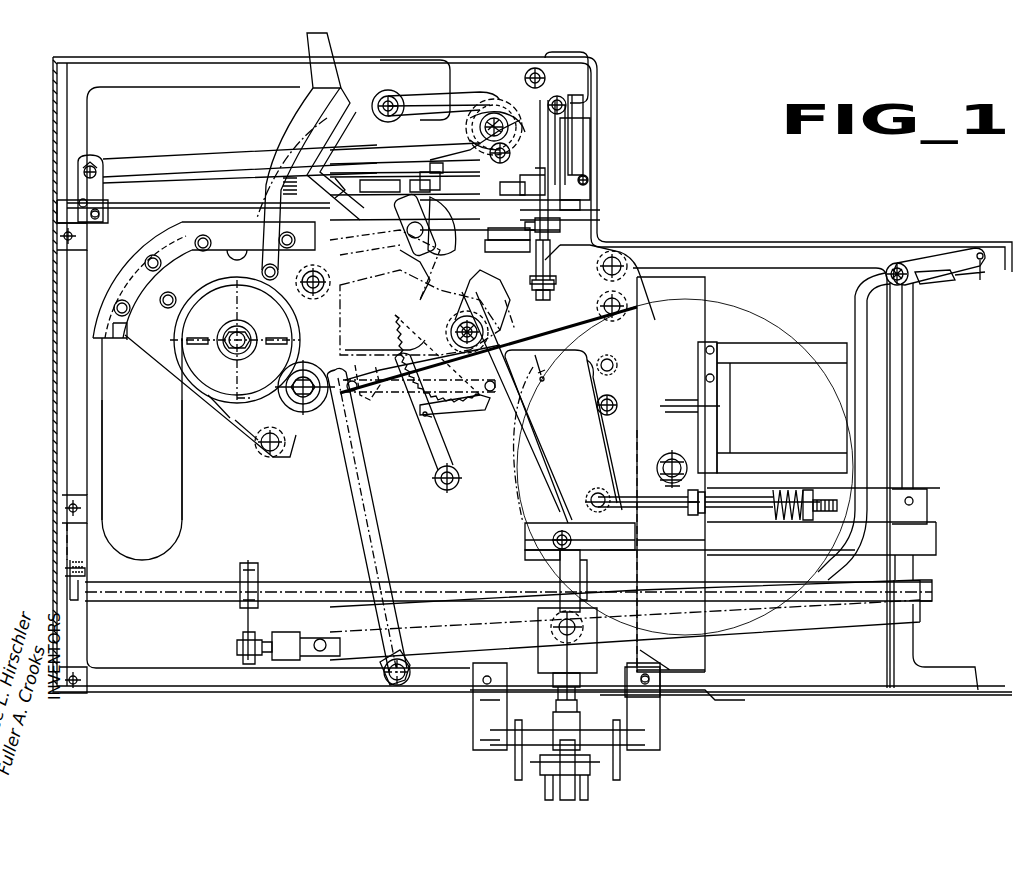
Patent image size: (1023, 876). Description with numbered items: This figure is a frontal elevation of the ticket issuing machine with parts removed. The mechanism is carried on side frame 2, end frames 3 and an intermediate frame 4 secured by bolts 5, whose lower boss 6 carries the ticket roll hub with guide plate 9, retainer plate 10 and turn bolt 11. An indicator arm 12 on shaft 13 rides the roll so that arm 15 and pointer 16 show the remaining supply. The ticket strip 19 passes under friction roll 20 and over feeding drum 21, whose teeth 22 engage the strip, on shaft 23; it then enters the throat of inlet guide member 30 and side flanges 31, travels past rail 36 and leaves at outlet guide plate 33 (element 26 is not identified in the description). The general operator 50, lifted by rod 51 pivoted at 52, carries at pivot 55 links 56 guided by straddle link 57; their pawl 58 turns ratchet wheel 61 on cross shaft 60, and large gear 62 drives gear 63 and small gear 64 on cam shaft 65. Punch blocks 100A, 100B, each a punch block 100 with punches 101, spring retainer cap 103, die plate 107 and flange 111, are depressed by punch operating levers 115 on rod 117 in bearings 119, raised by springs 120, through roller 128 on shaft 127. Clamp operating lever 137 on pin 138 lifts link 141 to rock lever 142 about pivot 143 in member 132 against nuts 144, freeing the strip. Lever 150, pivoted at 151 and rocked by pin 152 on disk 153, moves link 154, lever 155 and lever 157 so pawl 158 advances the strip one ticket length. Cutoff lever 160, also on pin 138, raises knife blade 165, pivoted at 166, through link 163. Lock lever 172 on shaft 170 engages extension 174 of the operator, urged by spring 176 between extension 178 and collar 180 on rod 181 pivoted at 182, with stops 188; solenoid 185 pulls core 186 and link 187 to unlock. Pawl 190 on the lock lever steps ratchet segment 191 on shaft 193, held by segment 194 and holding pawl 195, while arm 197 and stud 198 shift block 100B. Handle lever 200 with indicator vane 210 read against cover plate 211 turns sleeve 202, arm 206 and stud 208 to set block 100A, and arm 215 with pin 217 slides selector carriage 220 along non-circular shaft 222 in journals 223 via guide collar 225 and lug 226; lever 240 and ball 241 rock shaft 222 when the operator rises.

The side frame 2 is at (75, 384).
The end frames 3 is at (64, 536).
The intermediate frame 4 is at (238, 420).
The bolts 5 is at (258, 450).
The double elongated boss 6 is at (662, 480).
The guide plate 9 is at (705, 648).
The retainer plate 10 is at (240, 395).
The turn bolt 11 is at (665, 458).
The indicator arm 12 is at (856, 333).
The shaft 13 is at (905, 280).
The arm 15 is at (940, 255).
The pointer 16 is at (953, 277).
The ticket strip 19 is at (168, 438).
The friction roll 20 is at (350, 345).
The feeding drum 21 is at (195, 372).
The teeth 22 is at (180, 362).
The shaft 23 is at (245, 337).
The key 26 is at (198, 338).
The inlet guide member 30 is at (120, 322).
The side flanges 31 is at (125, 256).
The outlet guide plate 33 is at (550, 215).
The rail 36 is at (122, 212).
The general operator 50 is at (440, 650).
The rod 51 is at (555, 693).
The pivot 52 is at (560, 632).
The pivot 55 is at (312, 638).
The links 56 is at (315, 508).
The straddle link 57 is at (345, 278).
The pawl 58 is at (308, 270).
The cross shaft 60 is at (370, 245).
The ratchet wheel 61 is at (372, 176).
The large gear 62 is at (303, 143).
The gear 63 is at (208, 405).
The small gear 64 is at (470, 136).
The cam shaft 65 is at (495, 115).
The punch block 100 is at (400, 176).
The punch block 100A is at (445, 188).
The punch block 100B is at (520, 188).
The punch 101 is at (445, 176).
The spring retainer cap 103 is at (425, 176).
The die plate 107 is at (448, 228).
The flange 111 is at (350, 205).
The punch operating levers 115 is at (133, 162).
The rod 117 is at (92, 165).
The bearings 119 is at (75, 210).
The springs 120 is at (280, 158).
The shaft 127 is at (490, 160).
The roller 128 is at (555, 112).
The member 132 is at (540, 260).
The clamp operating lever 137 is at (550, 95).
The pin 138 is at (382, 95).
The link 141 is at (585, 128).
The lever 142 is at (550, 290).
The pivot 143 is at (552, 279).
The nuts 144 is at (545, 305).
The lever 150 is at (510, 312).
The pivot 151 is at (532, 68).
The pin 152 is at (488, 112).
The disk 153 is at (560, 100).
The link 154 is at (372, 392).
The lever 155 is at (358, 414).
The lever 157 is at (356, 431).
The pawl 158 is at (392, 244).
The cutoff lever 160 is at (408, 100).
The link 163 is at (583, 143).
The knife blade 165 is at (570, 200).
The pivot 166 is at (560, 225).
The shaft 170 is at (620, 308).
The lock lever 172 is at (593, 435).
The extension 174 is at (628, 570).
The spring 176 is at (772, 515).
The extension 178 is at (670, 518).
The collar 180 is at (800, 518).
The rod 181 is at (825, 514).
The pivot 182 is at (590, 490).
The solenoid 185 is at (808, 407).
The core 186 is at (705, 402).
The link 187 is at (600, 400).
The stops 188 is at (700, 518).
The pawl 190 is at (543, 395).
The ratchet segment 191 is at (472, 400).
The shaft 193 is at (480, 330).
The ratchet segment 194 is at (400, 327).
The holding pawl 195 is at (430, 448).
The arm 197 is at (495, 250).
The stud 198 is at (490, 235).
The handle lever 200 is at (310, 43).
The sleeve 202 is at (455, 334).
The arm 206 is at (450, 255).
The stud 208 is at (410, 255).
The indicator vane 210 is at (330, 58).
The cover plate 211 is at (388, 62).
The arm 215 is at (505, 445).
The pin 217 is at (575, 538).
The selector carriage 220 is at (525, 533).
The non-circular shaft 222 is at (120, 590).
The journals 223 is at (88, 572).
The guide collar 225 is at (560, 568).
The lug 226 is at (525, 556).
The lever 240 is at (248, 618).
The ball 241 is at (248, 645).